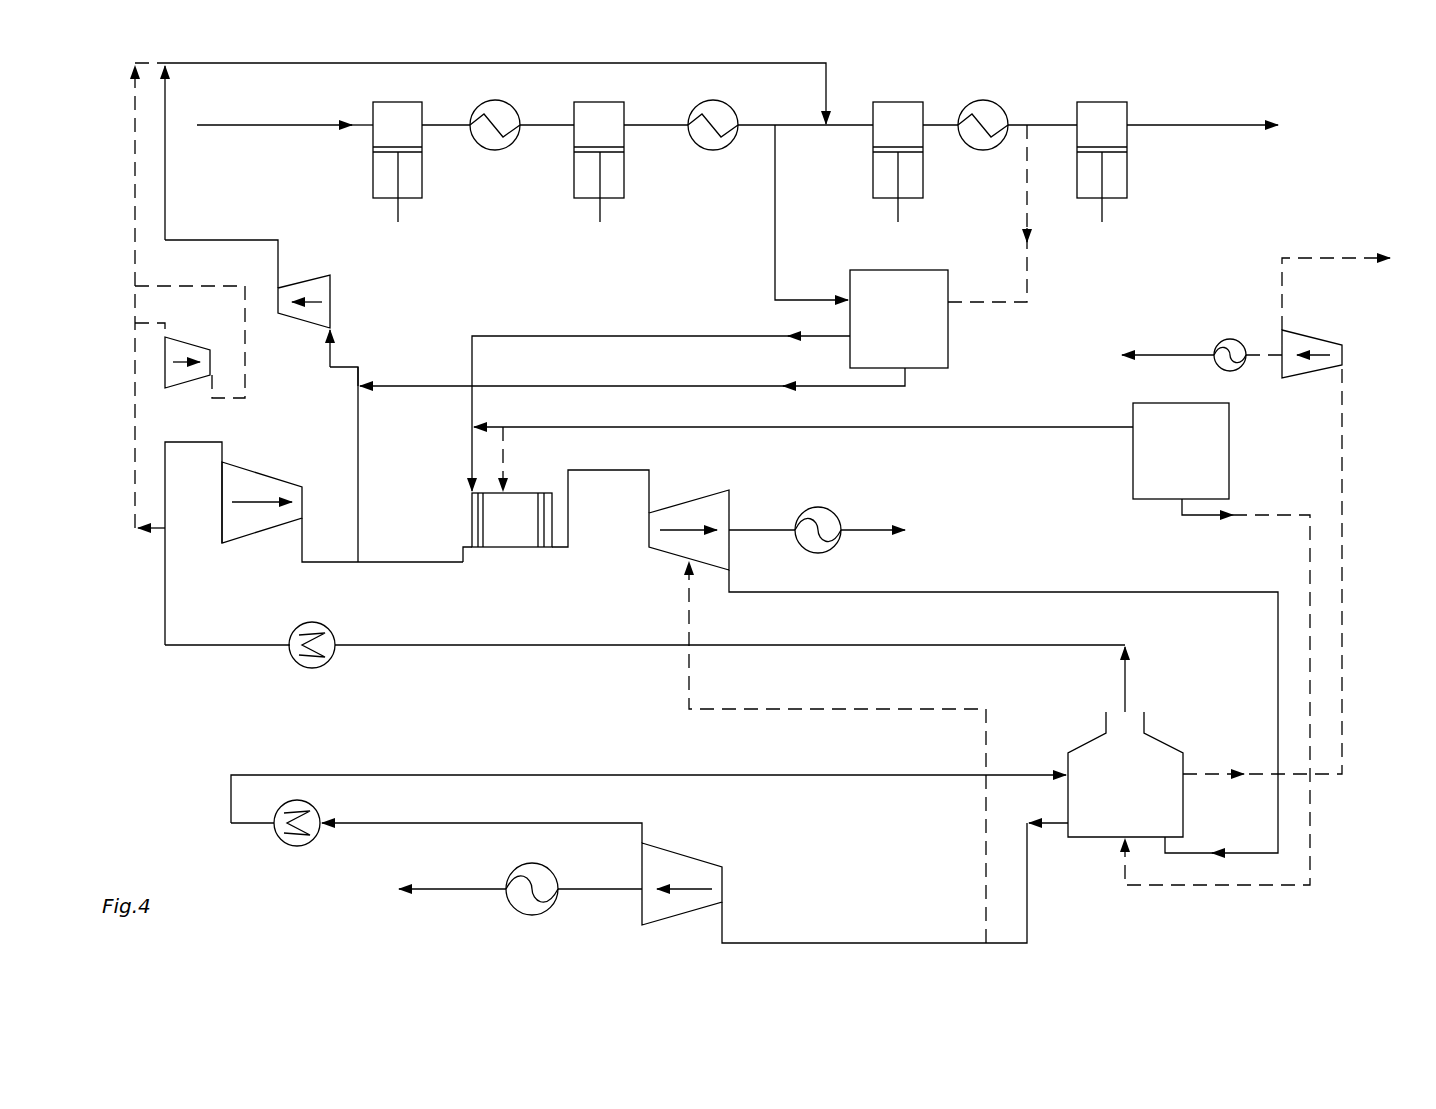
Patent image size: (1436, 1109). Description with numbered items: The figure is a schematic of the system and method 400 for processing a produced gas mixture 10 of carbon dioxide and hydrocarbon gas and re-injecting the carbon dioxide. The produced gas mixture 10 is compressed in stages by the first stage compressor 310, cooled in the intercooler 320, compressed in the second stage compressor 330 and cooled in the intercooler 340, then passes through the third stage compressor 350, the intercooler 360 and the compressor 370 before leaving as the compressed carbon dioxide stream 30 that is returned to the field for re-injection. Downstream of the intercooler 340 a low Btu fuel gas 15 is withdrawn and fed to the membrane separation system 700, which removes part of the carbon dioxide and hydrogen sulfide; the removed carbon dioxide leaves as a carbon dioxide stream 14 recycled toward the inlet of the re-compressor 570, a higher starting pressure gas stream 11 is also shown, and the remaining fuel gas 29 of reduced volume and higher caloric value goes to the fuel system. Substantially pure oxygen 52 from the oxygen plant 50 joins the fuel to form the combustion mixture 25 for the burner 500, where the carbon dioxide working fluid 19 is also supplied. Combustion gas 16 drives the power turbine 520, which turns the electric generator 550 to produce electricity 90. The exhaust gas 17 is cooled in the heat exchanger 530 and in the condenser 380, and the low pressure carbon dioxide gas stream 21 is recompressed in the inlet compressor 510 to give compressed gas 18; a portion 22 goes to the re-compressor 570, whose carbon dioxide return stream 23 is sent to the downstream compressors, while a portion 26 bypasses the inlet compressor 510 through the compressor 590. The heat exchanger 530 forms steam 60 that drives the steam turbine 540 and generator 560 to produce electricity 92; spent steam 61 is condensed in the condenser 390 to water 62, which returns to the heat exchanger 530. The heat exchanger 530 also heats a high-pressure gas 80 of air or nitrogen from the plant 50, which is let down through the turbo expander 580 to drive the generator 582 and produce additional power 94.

The system and method 400 is at (1330, 158).
The produced gas mixture 10 is at (270, 123).
The first stage compressor 310 is at (405, 100).
The intercooler 320 is at (490, 102).
The second stage compressor 330 is at (598, 100).
The intercooler 340 is at (712, 100).
The third stage compressor 350 is at (900, 100).
The intercooler 360 is at (985, 100).
The compressor 370 is at (1100, 100).
The compressed carbon dioxide stream 30 is at (1248, 122).
The carbon dioxide return stream 23 is at (218, 240).
The re-compressor 570 is at (316, 283).
The portion of low pressure carbon dioxide gas stream 26 is at (133, 175).
The compressor 590 is at (178, 338).
The low Btu fuel gas 15 is at (777, 212).
The membrane separation system 700 is at (865, 270).
The higher starting pressure gas stream 11 is at (1030, 272).
The fuel gas 29 is at (520, 336).
The carbon dioxide stream 14 is at (615, 386).
The low pressure carbon dioxide gas stream 21 is at (197, 442).
The inlet compressor 510 is at (258, 470).
The portion of carbon dioxide gas stream 22 is at (356, 500).
The compressed gas 18 is at (320, 563).
The working fluid 19 is at (463, 557).
The combustion mixture 25 is at (468, 460).
The oxygen stream 52 is at (503, 437).
The burner 500 is at (512, 550).
The combustion gas 16 is at (587, 472).
The power turbine 520 is at (703, 493).
The electric generator 550 is at (820, 507).
The electricity 90 is at (881, 515).
The exhaust gas 17 is at (560, 645).
The condenser 380 is at (302, 625).
The oxygen plant 50 is at (1156, 403).
The generator 582 is at (1226, 340).
The additional power 94 is at (1158, 352).
The turbo expander 580 is at (1308, 343).
The high-pressure gas 80 is at (1258, 515).
The heat exchanger 530 is at (1160, 745).
The steam 60 is at (930, 709).
The steam turbine 540 is at (674, 852).
The spent steam 61 is at (430, 823).
The condenser 390 is at (288, 846).
The water 62 is at (775, 775).
The generator 560 is at (537, 865).
The electricity 92 is at (458, 889).